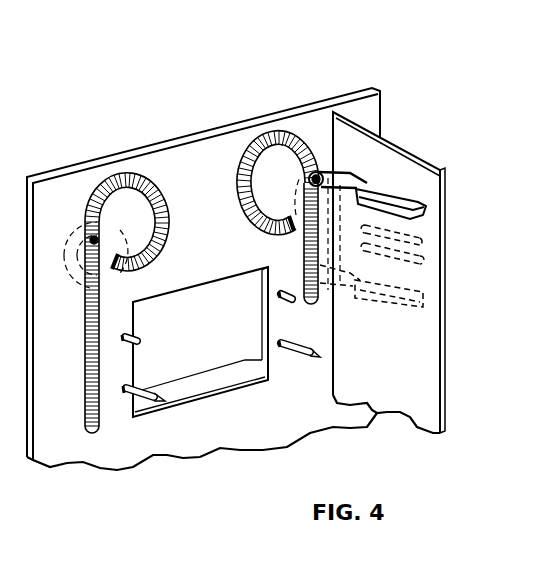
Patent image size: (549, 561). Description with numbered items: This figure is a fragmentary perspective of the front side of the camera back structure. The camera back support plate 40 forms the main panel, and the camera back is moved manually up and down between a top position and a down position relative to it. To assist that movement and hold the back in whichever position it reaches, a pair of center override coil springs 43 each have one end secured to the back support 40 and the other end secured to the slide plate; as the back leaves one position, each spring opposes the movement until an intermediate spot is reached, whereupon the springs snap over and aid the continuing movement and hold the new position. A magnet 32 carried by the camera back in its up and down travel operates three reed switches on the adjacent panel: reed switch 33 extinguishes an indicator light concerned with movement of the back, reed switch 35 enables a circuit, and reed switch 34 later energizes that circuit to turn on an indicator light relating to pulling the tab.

The camera back support plate 40 is at (233, 125).
The center override coil springs 43 is at (148, 172).
The magnet 32 is at (395, 190).
The reed switch 33 is at (422, 242).
The reed switch 34 is at (420, 257).
The reed switch 35 is at (420, 307).